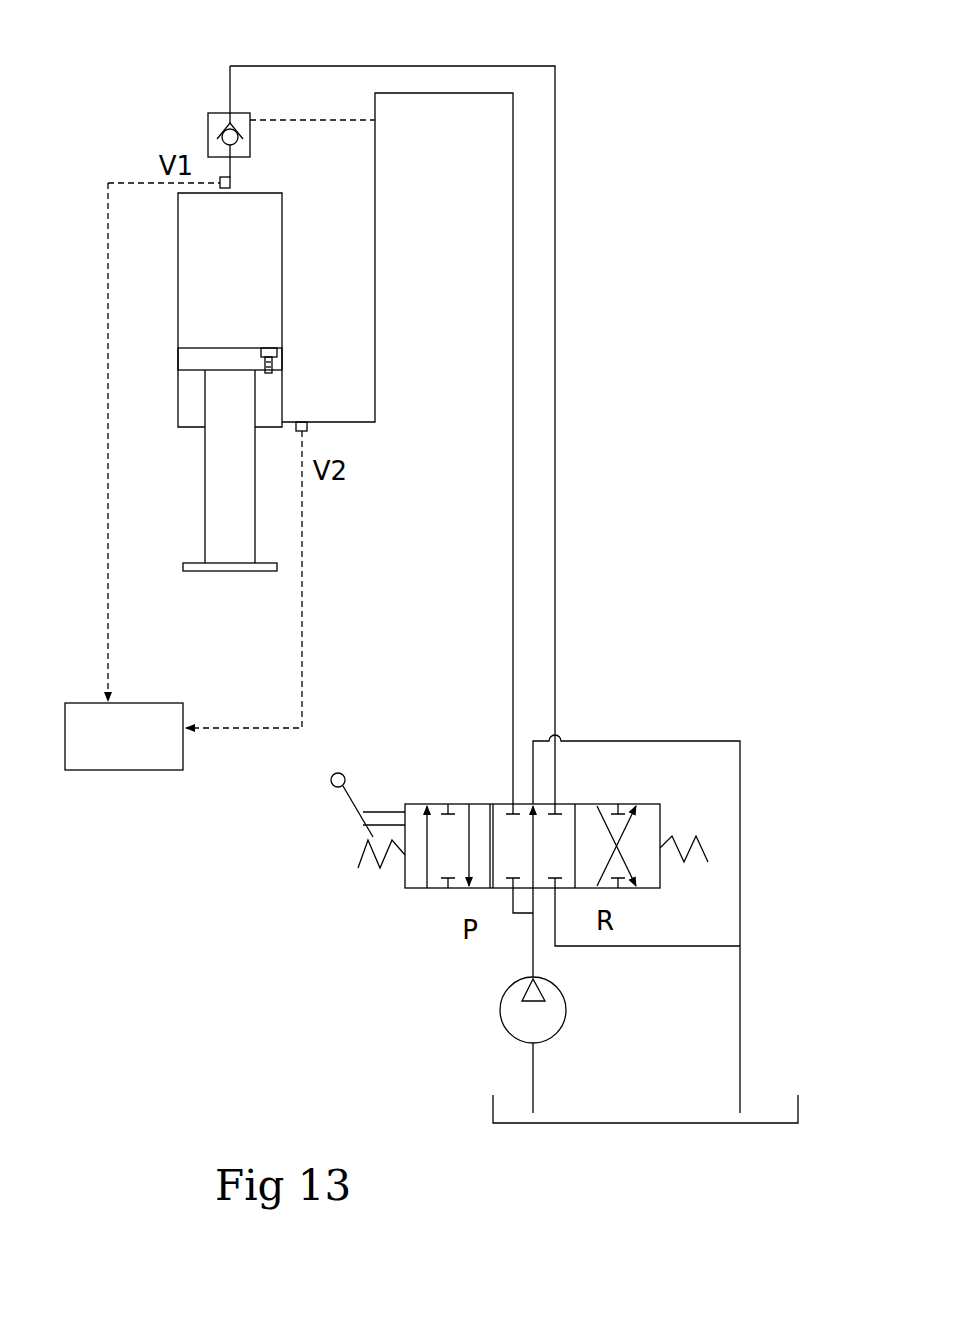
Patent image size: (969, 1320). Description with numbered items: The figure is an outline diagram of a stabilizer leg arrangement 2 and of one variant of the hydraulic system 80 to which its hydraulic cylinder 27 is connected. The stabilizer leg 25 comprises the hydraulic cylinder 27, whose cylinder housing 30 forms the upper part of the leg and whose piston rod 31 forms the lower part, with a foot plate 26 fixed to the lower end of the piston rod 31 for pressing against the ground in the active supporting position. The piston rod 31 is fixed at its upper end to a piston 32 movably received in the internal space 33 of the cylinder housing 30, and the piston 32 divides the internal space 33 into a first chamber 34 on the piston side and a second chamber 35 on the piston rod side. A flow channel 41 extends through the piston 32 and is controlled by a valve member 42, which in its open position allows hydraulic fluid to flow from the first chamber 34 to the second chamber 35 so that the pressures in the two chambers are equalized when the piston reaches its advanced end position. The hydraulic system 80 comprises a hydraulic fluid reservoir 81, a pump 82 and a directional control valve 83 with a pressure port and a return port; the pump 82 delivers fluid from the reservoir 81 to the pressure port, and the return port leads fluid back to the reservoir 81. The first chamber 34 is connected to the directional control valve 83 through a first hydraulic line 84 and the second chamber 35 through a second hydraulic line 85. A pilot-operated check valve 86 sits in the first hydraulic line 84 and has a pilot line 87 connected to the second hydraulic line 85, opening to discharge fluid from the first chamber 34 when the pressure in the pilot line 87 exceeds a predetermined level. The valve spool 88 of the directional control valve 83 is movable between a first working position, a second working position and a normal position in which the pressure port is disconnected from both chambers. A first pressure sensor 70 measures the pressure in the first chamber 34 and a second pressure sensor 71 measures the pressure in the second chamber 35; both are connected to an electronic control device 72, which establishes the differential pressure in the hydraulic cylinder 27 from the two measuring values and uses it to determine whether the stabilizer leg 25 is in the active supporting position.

The stabilizer leg arrangement 2 is at (142, 96).
The stabilizer leg 25 is at (297, 188).
The foot plate 26 is at (197, 563).
The hydraulic cylinder 27 is at (289, 241).
The cylinder housing 30 is at (178, 306).
The piston rod 31 is at (212, 465).
The piston 32 is at (185, 362).
The internal space 33 is at (197, 257).
The first chamber 34 is at (272, 289).
The second chamber 35 is at (275, 404).
The flow channel 41 is at (275, 362).
The valve member 42 is at (265, 350).
The first pressure sensor 70 is at (233, 182).
The second pressure sensor 71 is at (308, 428).
The electronic control device 72 is at (120, 764).
The hydraulic system 80 is at (280, 905).
The hydraulic fluid reservoir 81 is at (778, 1110).
The pump 82 is at (510, 1018).
The directional control valve 83 is at (434, 904).
The first hydraulic line 84 is at (560, 177).
The second hydraulic line 85 is at (512, 176).
The pilot-operated check valve 86 is at (219, 113).
The pilot line 87 is at (294, 120).
The valve spool 88 is at (629, 805).